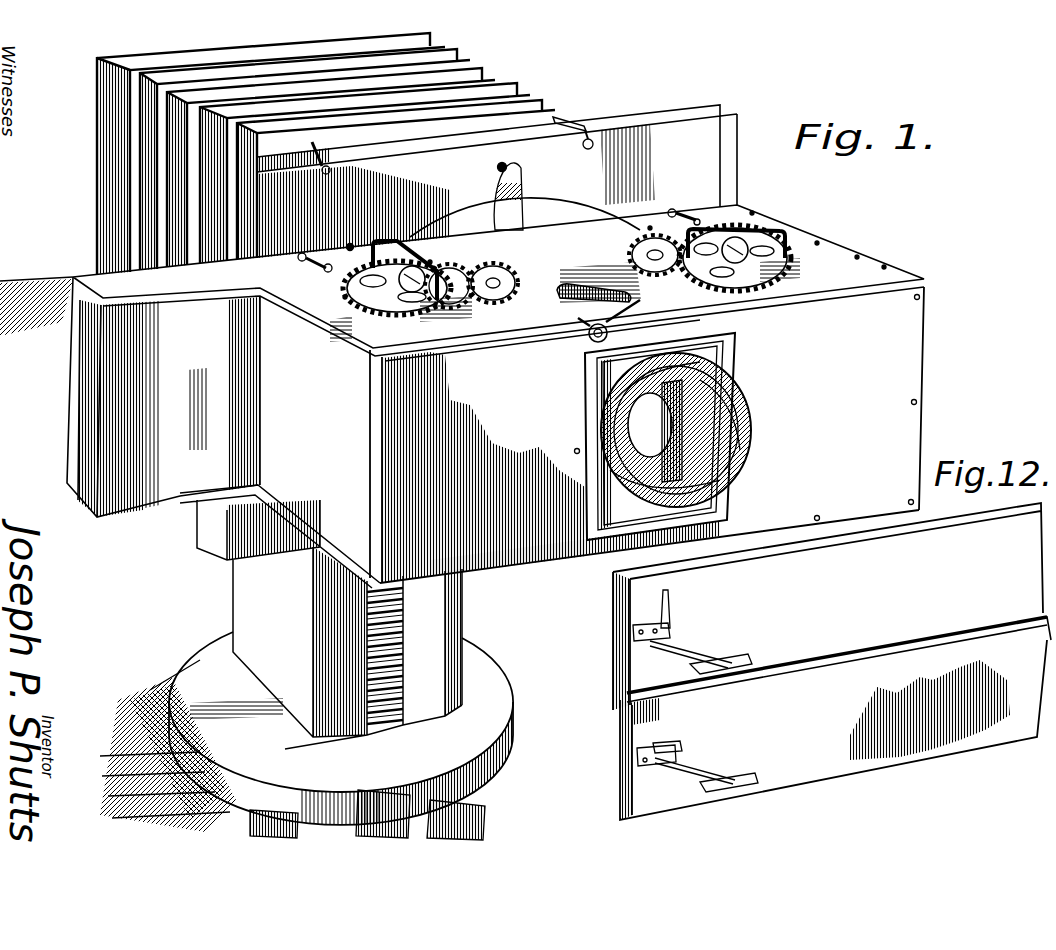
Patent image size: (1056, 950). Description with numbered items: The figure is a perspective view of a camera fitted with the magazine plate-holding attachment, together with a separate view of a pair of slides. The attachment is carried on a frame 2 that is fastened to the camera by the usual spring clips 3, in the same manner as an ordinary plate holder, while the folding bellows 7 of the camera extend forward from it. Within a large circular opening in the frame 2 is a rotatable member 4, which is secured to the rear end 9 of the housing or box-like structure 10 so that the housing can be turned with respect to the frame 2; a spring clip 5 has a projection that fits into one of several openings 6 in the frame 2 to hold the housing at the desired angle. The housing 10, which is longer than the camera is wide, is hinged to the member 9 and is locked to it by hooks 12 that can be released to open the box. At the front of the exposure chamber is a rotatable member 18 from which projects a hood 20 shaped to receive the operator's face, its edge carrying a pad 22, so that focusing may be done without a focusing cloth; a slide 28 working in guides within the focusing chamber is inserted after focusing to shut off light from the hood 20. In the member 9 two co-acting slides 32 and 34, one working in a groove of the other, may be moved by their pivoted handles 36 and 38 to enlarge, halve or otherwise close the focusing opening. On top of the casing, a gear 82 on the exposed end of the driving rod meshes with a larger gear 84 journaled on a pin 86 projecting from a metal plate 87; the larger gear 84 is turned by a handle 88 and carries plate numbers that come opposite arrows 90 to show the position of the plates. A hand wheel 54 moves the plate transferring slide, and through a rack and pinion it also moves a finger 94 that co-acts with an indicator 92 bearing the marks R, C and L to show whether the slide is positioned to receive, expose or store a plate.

In FIG. 1, the frame 2 is at (641, 125).
In FIG. 1, the spring clips 3 is at (584, 147).
In FIG. 1, the rotatable member 4 is at (587, 213).
In FIG. 1, the spring clip 5 is at (520, 192).
In FIG. 1, the openings 6 is at (497, 167).
In FIG. 1, the bellows 7 is at (499, 92).
In FIG. 1, the rear end 9 is at (72, 436).
In FIG. 1, the housing or box-like structure 10 is at (316, 514).
In FIG. 1, the hooks 12 is at (309, 261).
In FIG. 1, the rotatable member 18 is at (603, 417).
In FIG. 1, the hood 20 is at (745, 455).
In FIG. 1, the pad 22 is at (744, 412).
In FIG. 1, the slide 28 is at (571, 287).
In FIG. 12, the slide 32 is at (613, 606).
In FIG. 12, the slide 34 is at (620, 797).
In FIG. 12, the pivoted handle 36 is at (690, 658).
In FIG. 12, the pivoted handle 38 is at (700, 780).
In FIG. 1, the hand wheel 54 is at (585, 343).
In FIG. 1, the gear 82 is at (507, 271).
In FIG. 1, the larger gear 84 is at (360, 305).
In FIG. 1, the pin 86 is at (405, 308).
In FIG. 1, the metal plate 87 is at (497, 303).
In FIG. 1, the handle 88 is at (430, 302).
In FIG. 1, the arrows 90 is at (470, 324).
In FIG. 1, the indicator 92 is at (548, 318).
In FIG. 1, the finger 94 is at (590, 325).